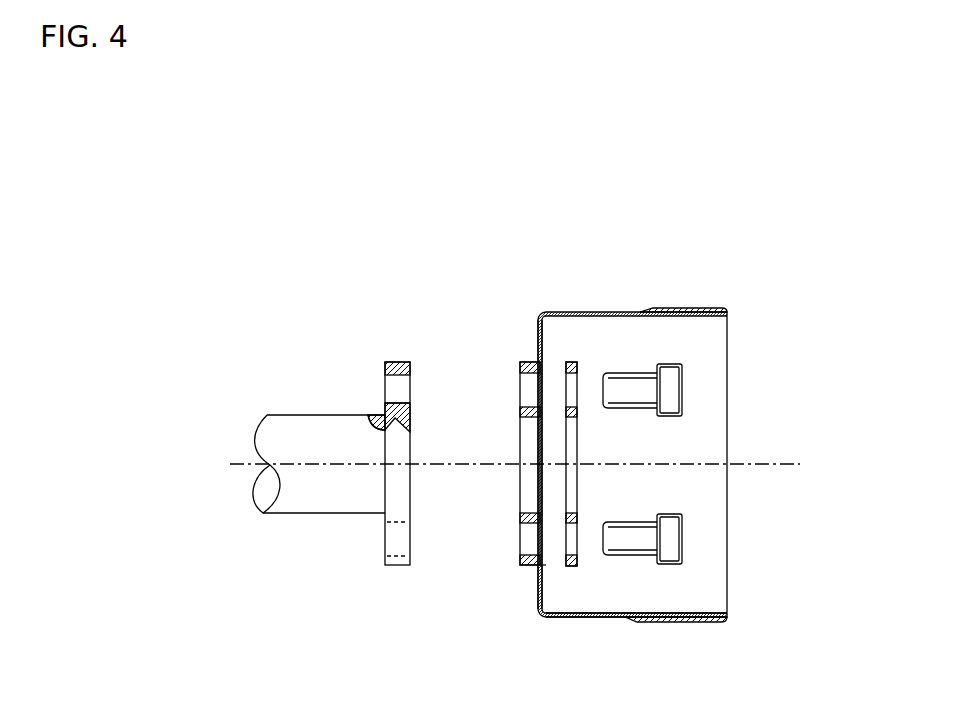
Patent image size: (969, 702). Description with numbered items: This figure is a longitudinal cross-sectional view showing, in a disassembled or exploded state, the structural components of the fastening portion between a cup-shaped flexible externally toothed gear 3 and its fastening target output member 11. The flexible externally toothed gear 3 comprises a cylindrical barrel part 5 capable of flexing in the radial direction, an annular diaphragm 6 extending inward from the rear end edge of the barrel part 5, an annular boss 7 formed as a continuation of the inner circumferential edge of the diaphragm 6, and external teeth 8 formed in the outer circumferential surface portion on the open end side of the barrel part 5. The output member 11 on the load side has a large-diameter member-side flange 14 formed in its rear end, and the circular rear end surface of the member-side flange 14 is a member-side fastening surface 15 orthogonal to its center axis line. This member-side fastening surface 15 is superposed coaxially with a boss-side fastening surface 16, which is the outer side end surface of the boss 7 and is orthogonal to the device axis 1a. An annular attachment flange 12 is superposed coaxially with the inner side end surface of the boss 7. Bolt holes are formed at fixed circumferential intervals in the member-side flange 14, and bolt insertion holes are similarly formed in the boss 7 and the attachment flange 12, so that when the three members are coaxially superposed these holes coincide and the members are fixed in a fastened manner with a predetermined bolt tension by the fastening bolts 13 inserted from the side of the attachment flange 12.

The device axis 1a is at (800, 464).
The flexible externally toothed gear 3 is at (633, 451).
The cylindrical barrel part 5 is at (610, 618).
The annular diaphragm 6 is at (537, 594).
The annular boss 7 is at (522, 566).
The external teeth 8 is at (697, 621).
The output member 11 is at (316, 398).
The attachment flange 12 is at (578, 352).
The fastening bolts 13 is at (700, 390).
The member-side flange 14 is at (395, 497).
The member-side fastening surface 15 is at (410, 500).
The boss-side fastening surface 16 is at (518, 383).